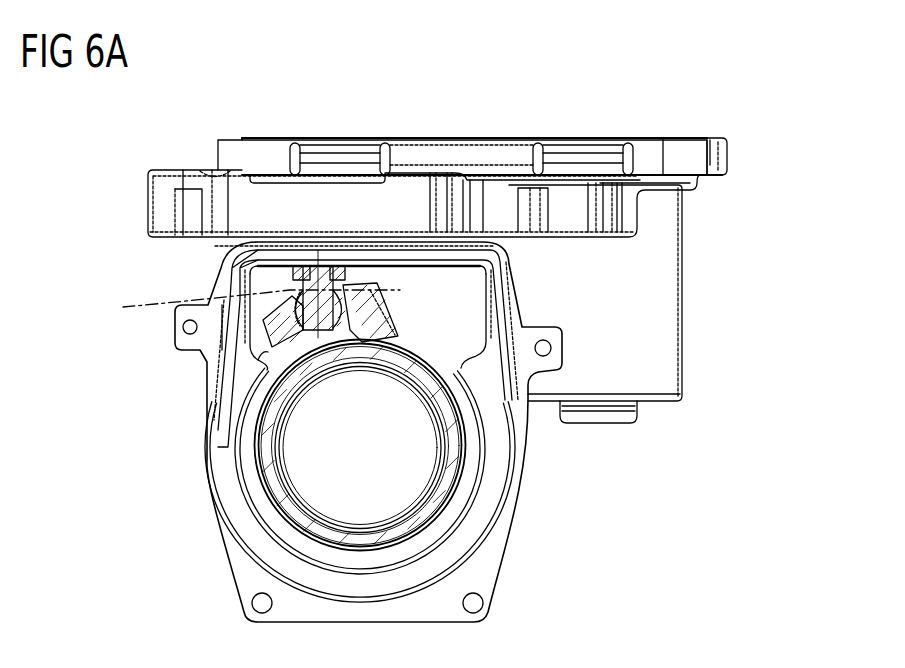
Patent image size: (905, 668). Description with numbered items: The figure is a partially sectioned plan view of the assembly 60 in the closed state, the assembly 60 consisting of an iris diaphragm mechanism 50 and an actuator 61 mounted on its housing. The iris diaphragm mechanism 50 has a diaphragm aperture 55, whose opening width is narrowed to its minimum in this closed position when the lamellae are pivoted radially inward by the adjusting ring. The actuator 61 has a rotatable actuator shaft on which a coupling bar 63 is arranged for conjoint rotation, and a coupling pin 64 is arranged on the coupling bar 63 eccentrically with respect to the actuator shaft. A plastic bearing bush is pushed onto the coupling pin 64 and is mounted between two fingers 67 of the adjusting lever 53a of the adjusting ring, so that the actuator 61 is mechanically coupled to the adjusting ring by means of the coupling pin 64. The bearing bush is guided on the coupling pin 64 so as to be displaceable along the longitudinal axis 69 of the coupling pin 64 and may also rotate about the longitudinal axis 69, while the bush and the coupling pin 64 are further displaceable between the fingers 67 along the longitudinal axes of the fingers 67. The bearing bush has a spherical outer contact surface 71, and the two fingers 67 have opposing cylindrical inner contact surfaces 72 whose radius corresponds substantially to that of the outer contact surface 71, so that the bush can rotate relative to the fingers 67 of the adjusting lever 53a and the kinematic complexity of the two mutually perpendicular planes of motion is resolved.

The iris diaphragm mechanism 50 is at (545, 578).
The adjusting lever 53a is at (267, 370).
The diaphragm aperture 55 is at (345, 460).
The assembly 60 is at (768, 122).
The actuator 61 is at (650, 330).
The coupling bar 63 is at (292, 270).
The coupling pin 64 is at (316, 282).
The fingers 67 is at (377, 298).
The longitudinal axis of the coupling pin 69 is at (248, 308).
The outer contact surface 71 is at (347, 303).
The inner contact surfaces 72 is at (297, 309).